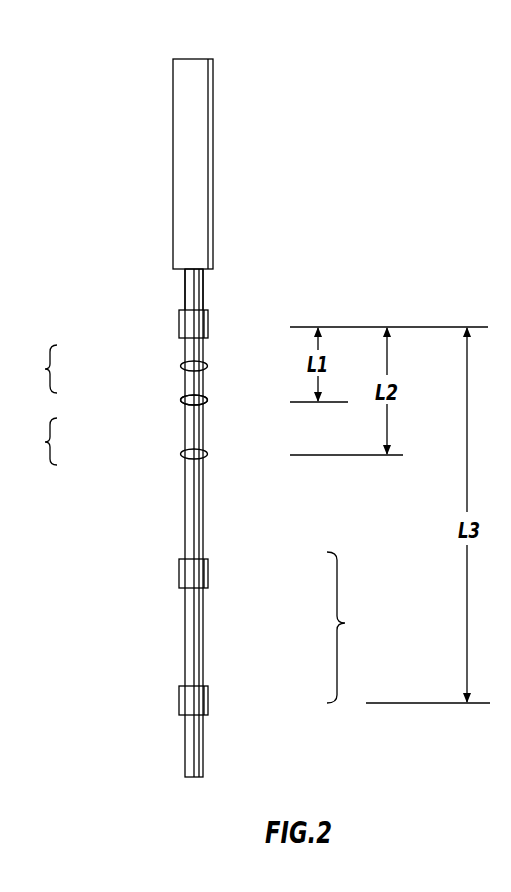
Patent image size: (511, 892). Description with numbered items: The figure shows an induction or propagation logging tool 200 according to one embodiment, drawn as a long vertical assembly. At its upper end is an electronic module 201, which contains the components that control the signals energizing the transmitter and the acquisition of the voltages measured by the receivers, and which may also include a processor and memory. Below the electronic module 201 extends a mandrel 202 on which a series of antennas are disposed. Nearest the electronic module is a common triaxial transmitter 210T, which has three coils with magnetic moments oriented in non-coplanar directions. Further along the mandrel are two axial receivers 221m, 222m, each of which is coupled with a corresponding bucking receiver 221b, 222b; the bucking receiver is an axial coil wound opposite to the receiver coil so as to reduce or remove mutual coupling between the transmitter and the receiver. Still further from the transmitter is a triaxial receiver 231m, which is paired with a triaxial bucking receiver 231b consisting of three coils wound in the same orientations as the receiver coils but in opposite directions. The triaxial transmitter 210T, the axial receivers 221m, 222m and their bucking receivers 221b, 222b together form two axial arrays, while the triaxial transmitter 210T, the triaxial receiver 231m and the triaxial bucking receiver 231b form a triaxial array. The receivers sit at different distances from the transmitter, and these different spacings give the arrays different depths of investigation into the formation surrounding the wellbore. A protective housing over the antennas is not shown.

The induction or propagation tool 200 is at (108, 101).
The electronic module 201 is at (213, 192).
The mandrel 202 is at (184, 293).
The triaxial transmitter 210T is at (208, 322).
The bucking receiver 221b is at (181, 366).
The axial receiver 221m is at (181, 400).
The bucking receiver 222b is at (183, 405).
The axial receiver 222m is at (181, 455).
The triaxial bucking receiver 231b is at (208, 575).
The triaxial receiver 231m is at (208, 700).